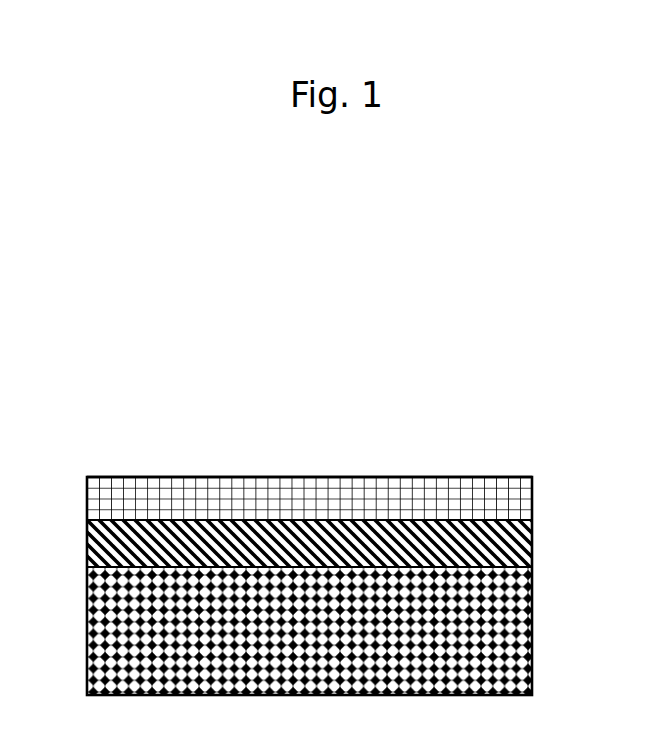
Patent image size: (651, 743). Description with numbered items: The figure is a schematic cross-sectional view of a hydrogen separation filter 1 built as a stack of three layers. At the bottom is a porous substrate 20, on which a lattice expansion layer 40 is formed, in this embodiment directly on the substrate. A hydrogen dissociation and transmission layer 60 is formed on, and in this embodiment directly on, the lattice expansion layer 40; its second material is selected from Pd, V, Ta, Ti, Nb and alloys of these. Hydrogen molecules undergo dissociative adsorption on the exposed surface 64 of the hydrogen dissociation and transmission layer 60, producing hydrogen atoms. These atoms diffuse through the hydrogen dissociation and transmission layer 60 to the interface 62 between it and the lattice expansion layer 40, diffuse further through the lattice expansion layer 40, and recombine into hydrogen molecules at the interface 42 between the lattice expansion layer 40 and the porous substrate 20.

The hydrogen separation filter 1 is at (508, 400).
The porous substrate 20 is at (520, 632).
The lattice expansion layer 40 is at (522, 547).
The interface between the lattice expansion layer and the porous substrate 42 is at (107, 569).
The hydrogen dissociation and transmission layer 60 is at (522, 502).
The interface between the lattice expansion layer and the hydrogen dissociation and 62 is at (105, 522).
The surface of the hydrogen dissociation and transmission layer 64 is at (103, 476).